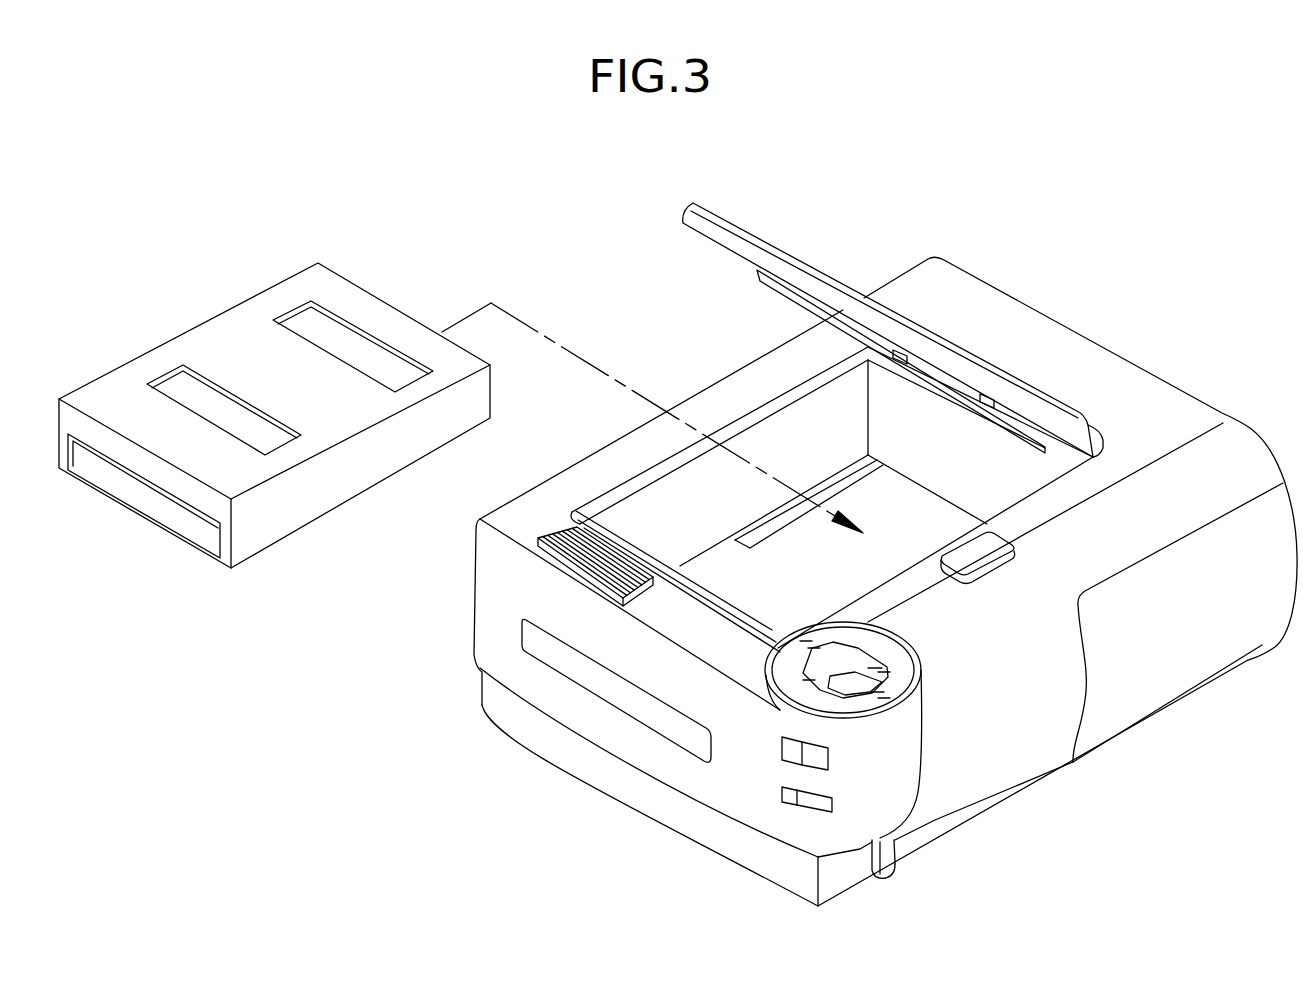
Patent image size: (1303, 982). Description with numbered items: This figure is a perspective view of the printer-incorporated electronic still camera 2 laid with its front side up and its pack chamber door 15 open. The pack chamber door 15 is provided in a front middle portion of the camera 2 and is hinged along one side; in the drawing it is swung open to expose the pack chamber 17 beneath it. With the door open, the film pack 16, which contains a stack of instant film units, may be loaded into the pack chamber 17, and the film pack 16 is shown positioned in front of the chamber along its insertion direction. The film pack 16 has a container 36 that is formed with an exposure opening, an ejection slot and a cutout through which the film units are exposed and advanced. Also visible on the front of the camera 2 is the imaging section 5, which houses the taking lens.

The printer-incorporated electronic still camera 2 is at (885, 524).
The imaging section 5 is at (901, 658).
The pack chamber door 15 is at (747, 240).
The film pack 16 is at (187, 332).
The pack chamber 17 is at (808, 450).
The container 36 is at (263, 540).